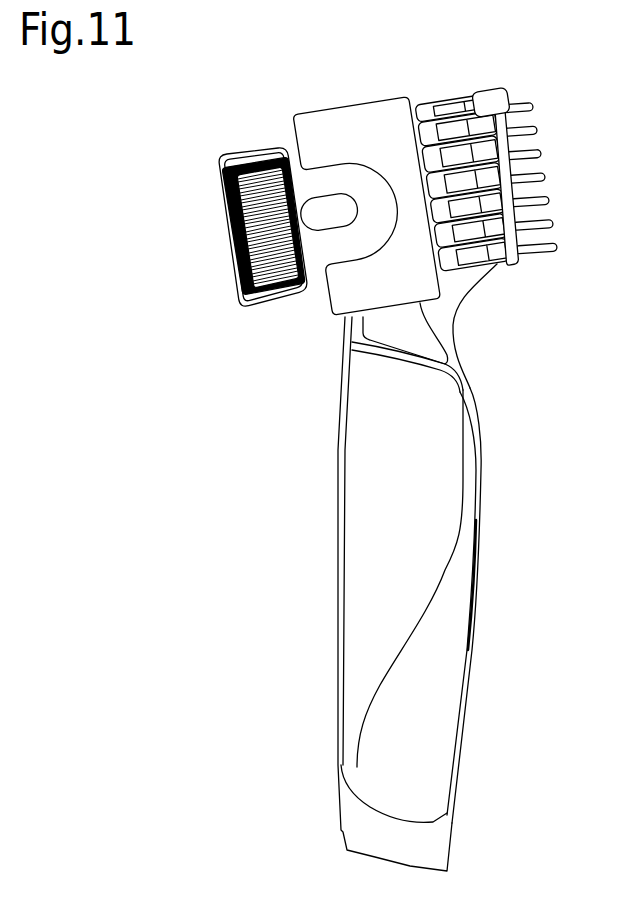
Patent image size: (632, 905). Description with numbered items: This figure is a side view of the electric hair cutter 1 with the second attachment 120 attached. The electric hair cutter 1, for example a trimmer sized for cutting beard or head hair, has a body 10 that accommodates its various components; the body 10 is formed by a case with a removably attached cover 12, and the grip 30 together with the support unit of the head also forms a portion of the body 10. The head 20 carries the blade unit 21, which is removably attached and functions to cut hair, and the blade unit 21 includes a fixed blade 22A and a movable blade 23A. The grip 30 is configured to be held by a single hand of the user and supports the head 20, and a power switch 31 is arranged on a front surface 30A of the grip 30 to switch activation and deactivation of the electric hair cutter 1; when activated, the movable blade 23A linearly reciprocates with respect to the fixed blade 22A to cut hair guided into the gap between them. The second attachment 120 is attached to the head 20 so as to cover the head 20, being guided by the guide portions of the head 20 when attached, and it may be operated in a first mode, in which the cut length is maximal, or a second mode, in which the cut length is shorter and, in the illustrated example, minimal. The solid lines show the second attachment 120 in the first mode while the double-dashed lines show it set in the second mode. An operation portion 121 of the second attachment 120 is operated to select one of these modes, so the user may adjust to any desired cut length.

The electric hair cutter 1 is at (517, 54).
The body 10 is at (516, 751).
The cover 12 is at (355, 548).
The head 20 is at (495, 315).
The blade unit 21 is at (488, 173).
The fixed blade 22A is at (525, 134).
The movable blade 23A is at (534, 212).
The grip 30 is at (273, 758).
The front surface 30A is at (483, 472).
The power switch 31 is at (478, 548).
The second attachment 120 is at (348, 97).
The operation portion 121 is at (228, 232).